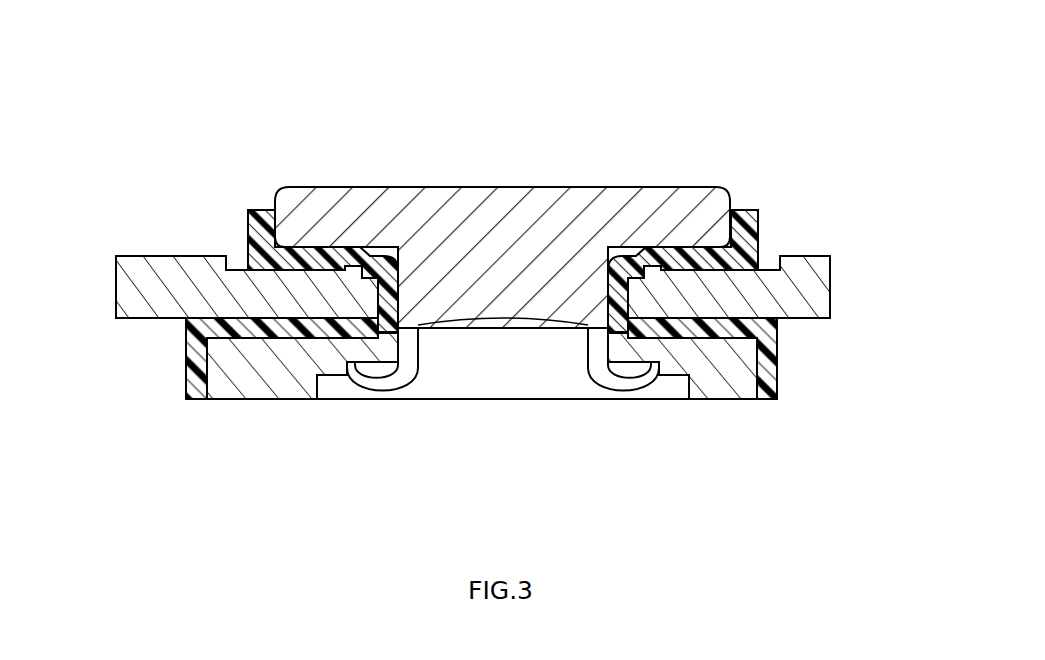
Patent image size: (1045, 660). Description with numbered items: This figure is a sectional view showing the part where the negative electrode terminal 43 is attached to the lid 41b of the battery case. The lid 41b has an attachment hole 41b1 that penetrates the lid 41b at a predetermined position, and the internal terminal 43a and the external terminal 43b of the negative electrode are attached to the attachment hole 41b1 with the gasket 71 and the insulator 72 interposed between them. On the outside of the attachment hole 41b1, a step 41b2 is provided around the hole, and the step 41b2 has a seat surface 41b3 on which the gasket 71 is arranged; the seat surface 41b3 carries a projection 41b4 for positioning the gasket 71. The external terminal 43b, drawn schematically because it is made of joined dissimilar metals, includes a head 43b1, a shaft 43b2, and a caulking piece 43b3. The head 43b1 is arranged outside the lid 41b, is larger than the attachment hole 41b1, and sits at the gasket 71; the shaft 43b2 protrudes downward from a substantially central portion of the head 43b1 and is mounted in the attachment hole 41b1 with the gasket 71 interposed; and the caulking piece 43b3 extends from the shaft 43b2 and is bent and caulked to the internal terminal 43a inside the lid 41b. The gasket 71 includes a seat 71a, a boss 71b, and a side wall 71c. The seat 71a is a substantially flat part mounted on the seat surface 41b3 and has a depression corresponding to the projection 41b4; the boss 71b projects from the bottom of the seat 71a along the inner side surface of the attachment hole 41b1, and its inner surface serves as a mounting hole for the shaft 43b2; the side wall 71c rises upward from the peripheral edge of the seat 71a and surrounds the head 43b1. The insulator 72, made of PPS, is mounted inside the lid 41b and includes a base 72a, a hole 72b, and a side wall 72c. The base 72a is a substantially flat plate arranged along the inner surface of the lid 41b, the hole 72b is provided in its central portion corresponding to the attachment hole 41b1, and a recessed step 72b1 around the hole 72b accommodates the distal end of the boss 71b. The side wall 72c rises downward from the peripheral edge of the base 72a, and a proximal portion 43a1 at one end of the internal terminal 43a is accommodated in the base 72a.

The negative electrode terminal 43 is at (489, 266).
The lid 41b is at (479, 292).
The attachment hole 41b1 is at (380, 288).
The step 41b2 is at (233, 253).
The seat surface 41b3 is at (745, 262).
The projection 41b4 is at (366, 260).
The internal terminal 43a is at (481, 417).
The proximal portion 43a1 is at (247, 402).
The external terminal 43b is at (515, 292).
The head 43b1 is at (568, 187).
The shaft 43b2 is at (633, 290).
The caulking piece 43b3 is at (417, 378).
The gasket 71 is at (543, 285).
The seat 71a is at (335, 250).
The boss 71b is at (607, 295).
The side wall 71c is at (288, 212).
The insulator 72 is at (524, 399).
The base 72a is at (705, 335).
The hole 72b is at (605, 385).
The recessed step 72b1 is at (360, 368).
The side wall 72c is at (752, 365).